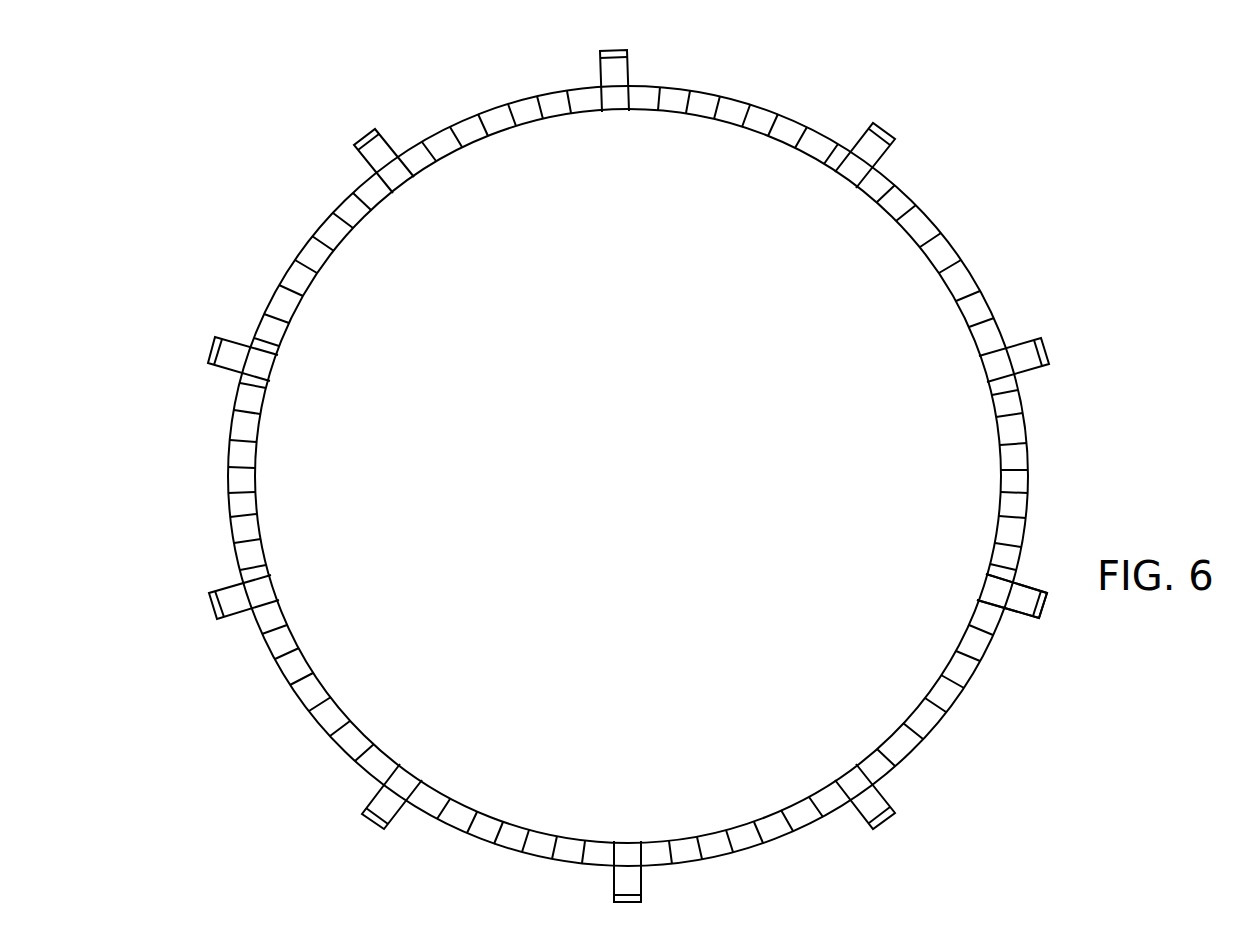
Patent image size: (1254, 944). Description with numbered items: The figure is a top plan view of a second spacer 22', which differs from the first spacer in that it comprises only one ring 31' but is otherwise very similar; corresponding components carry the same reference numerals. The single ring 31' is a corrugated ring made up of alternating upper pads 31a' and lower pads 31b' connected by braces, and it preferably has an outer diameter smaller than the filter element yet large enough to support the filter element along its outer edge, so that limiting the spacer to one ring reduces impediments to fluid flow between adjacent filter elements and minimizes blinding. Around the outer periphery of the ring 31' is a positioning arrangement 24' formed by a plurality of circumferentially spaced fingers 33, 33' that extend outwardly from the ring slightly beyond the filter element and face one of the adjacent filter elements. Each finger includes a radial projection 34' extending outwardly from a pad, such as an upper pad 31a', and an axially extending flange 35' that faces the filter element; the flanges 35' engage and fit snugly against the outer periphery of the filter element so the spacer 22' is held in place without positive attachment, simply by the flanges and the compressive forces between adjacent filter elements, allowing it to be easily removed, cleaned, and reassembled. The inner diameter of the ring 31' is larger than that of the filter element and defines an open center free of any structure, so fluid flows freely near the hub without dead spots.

The second spacer 22' is at (667, 476).
The ring 31' is at (691, 120).
The upper pad 31a' is at (248, 299).
The lower pad 31b' is at (211, 450).
The finger 33 is at (747, 116).
The radial projection 34' is at (541, 496).
The positioning arrangement 24' is at (655, 477).
The finger 33' is at (315, 702).
The flange 35' is at (944, 701).